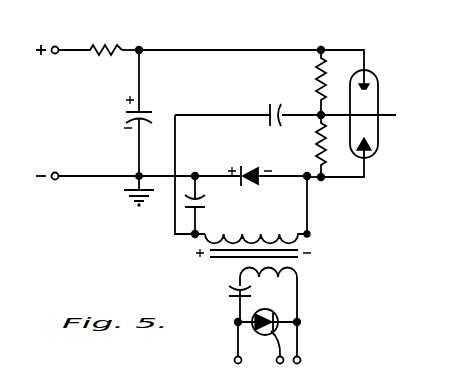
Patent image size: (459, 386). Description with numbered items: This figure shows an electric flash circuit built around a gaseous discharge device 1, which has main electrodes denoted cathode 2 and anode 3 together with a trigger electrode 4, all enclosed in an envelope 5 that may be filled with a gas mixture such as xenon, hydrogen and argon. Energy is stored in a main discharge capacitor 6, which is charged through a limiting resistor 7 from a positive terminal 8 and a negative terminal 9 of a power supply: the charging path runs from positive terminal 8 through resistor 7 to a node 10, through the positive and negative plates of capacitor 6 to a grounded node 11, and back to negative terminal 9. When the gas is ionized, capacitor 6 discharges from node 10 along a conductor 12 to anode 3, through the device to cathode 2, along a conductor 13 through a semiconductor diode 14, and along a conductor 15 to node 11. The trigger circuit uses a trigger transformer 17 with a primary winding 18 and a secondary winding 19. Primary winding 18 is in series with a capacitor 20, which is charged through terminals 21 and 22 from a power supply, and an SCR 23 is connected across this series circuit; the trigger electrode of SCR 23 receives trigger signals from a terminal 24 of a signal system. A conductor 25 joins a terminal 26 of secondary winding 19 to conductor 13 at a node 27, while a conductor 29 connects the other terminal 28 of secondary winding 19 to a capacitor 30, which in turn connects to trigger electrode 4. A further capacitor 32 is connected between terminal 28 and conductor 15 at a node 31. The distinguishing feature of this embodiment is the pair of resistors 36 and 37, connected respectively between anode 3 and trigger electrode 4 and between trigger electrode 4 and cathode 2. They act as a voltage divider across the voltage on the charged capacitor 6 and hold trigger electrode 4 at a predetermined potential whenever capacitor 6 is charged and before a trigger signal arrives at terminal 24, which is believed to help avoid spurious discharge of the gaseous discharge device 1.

The gaseous discharge device 1 is at (372, 135).
The cathode 2 is at (376, 148).
The anode 3 is at (371, 88).
The trigger electrode 4 is at (379, 114).
The envelope 5 is at (373, 157).
The main discharge capacitor 6 is at (128, 112).
The limiting resistor 7 is at (108, 46).
The positive terminal 8 is at (55, 46).
The negative terminal 9 is at (55, 171).
The node 10 is at (139, 46).
The node 11 is at (135, 173).
The conductor 12 is at (190, 49).
The conductor 13 is at (323, 181).
The semiconductor diode 14 is at (245, 168).
The conductor 15 is at (158, 175).
The trigger transformer 17 is at (300, 251).
The primary winding 18 is at (262, 271).
The secondary winding 19 is at (255, 233).
The capacitor 20 is at (226, 290).
The terminal 21 is at (235, 359).
The terminal 22 is at (301, 360).
The SCR 23 is at (290, 314).
The terminal 24 is at (277, 360).
The conductor 25 is at (309, 190).
The terminal 26 is at (312, 234).
The node 27 is at (305, 173).
The terminal 28 is at (193, 236).
The conductor 29 is at (232, 113).
The capacitor 30 is at (275, 105).
The node 31 is at (194, 172).
The capacitor 32 is at (208, 198).
The resistor 36 is at (318, 78).
The resistor 37 is at (318, 149).